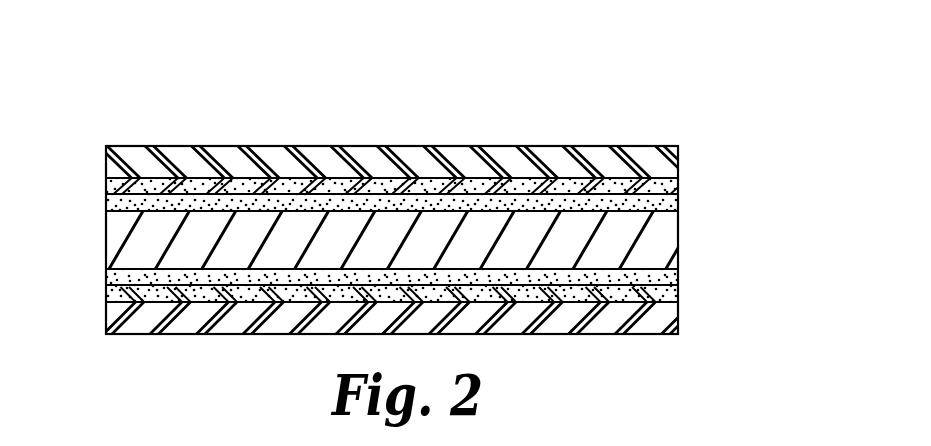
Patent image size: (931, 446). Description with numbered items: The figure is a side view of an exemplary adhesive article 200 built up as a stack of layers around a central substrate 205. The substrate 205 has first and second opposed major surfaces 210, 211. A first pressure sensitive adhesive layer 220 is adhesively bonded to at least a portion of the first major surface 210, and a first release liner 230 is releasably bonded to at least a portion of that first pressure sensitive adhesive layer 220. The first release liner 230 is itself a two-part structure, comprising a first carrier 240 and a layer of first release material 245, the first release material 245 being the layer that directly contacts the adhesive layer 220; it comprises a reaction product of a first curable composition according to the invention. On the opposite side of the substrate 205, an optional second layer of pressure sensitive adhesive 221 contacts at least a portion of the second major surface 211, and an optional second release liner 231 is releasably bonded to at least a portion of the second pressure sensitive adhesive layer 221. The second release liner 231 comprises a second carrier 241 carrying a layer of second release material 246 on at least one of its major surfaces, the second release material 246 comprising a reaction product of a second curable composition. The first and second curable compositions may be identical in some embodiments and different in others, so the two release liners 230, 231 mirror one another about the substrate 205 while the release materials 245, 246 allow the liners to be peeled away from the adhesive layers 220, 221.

The adhesive article 200 is at (214, 87).
The substrate 205 is at (678, 238).
The first major surface 210 is at (118, 202).
The second major surface 211 is at (120, 277).
The first pressure sensitive adhesive layer 220 is at (678, 201).
The second layer of pressure sensitive adhesive 221 is at (678, 273).
The first release liner 230 is at (95, 152).
The second release liner 231 is at (95, 290).
The first carrier 240 is at (678, 156).
The second carrier 241 is at (678, 322).
The first release material 245 is at (678, 184).
The second release material 246 is at (678, 293).